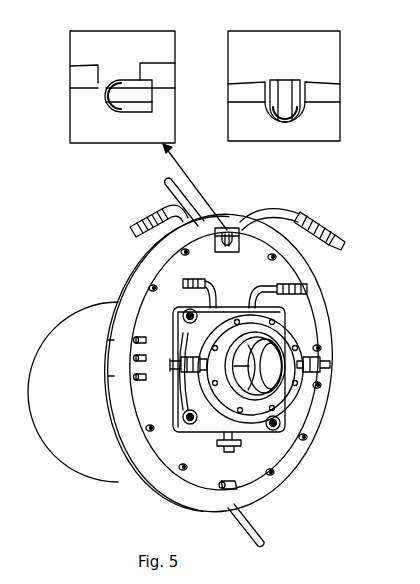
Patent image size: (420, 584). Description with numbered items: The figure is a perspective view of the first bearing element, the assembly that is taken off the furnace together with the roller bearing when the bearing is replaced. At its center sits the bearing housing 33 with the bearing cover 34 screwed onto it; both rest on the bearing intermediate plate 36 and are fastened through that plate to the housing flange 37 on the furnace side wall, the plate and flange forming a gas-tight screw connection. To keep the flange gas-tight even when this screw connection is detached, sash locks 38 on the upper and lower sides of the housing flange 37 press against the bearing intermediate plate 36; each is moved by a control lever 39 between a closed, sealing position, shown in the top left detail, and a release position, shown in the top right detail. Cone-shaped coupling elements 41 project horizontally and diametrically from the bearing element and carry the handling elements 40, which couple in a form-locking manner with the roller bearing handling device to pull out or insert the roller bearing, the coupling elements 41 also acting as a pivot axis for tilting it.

The bearing housing 33 is at (283, 421).
The bearing cover 34 is at (288, 337).
The bearing intermediate plate 36 is at (85, 124).
The housing flange 37 is at (85, 50).
The sash lock 38 is at (123, 78).
The control lever 39 is at (165, 183).
The handling element 40 is at (317, 378).
The coupling element 41 is at (183, 357).